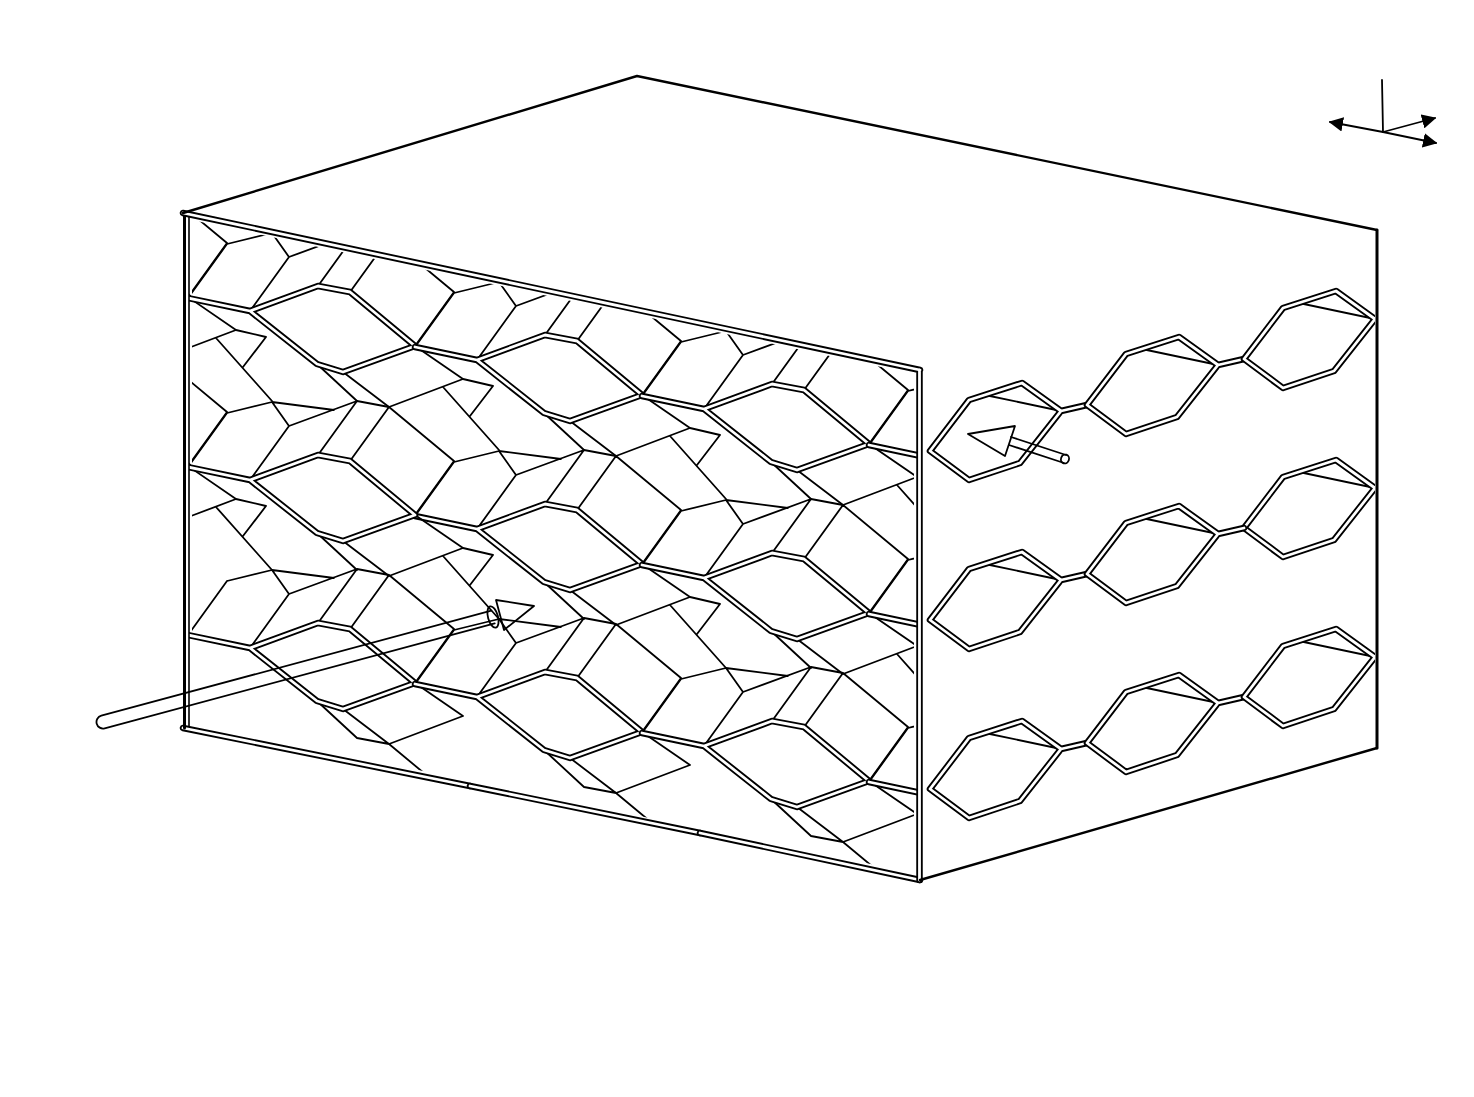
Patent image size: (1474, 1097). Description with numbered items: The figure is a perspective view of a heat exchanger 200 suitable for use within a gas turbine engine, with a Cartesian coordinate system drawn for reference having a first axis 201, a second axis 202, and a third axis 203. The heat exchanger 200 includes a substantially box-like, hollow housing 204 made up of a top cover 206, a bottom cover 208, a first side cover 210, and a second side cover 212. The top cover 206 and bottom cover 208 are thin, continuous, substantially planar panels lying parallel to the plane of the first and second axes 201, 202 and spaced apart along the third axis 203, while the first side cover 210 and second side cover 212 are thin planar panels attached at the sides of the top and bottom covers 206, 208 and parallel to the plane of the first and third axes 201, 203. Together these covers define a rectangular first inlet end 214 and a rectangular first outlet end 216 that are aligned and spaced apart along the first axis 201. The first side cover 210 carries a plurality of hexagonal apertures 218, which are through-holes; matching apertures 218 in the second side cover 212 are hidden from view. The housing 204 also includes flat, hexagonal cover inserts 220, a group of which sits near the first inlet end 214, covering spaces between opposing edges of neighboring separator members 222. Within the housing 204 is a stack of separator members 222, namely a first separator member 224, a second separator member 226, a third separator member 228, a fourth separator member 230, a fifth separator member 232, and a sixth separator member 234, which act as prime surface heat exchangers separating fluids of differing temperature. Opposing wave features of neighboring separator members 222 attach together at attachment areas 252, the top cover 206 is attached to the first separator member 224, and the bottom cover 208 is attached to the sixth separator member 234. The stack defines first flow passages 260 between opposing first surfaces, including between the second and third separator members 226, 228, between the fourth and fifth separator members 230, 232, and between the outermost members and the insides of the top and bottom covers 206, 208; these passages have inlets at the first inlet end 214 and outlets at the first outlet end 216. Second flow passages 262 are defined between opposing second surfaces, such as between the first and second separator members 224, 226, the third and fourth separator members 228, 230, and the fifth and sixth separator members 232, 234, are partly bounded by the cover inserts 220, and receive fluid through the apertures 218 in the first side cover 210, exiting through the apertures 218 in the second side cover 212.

The heat exchanger 200 is at (228, 117).
The first axis 201 is at (1405, 125).
The second axis 202 is at (1400, 140).
The third axis 203 is at (1380, 100).
The housing 204 is at (222, 197).
The top cover 206 is at (790, 205).
The bottom cover 208 is at (543, 788).
The first side cover 210 is at (1224, 628).
The second side cover 212 is at (198, 545).
The first inlet end 214 is at (410, 760).
The first outlet end 216 is at (1383, 392).
The apertures 218 is at (1183, 408).
The cover inserts 220 is at (760, 398).
The separator members 222 is at (305, 258).
The first separator member 224 is at (852, 377).
The second separator member 226 is at (875, 483).
The third separator member 228 is at (868, 563).
The fourth separator member 230 is at (882, 646).
The fifth separator member 232 is at (870, 722).
The sixth separator member 234 is at (850, 813).
The attachment areas 252 is at (660, 397).
The first flow passages 260 is at (716, 338).
The second flow passages 262 is at (1333, 514).